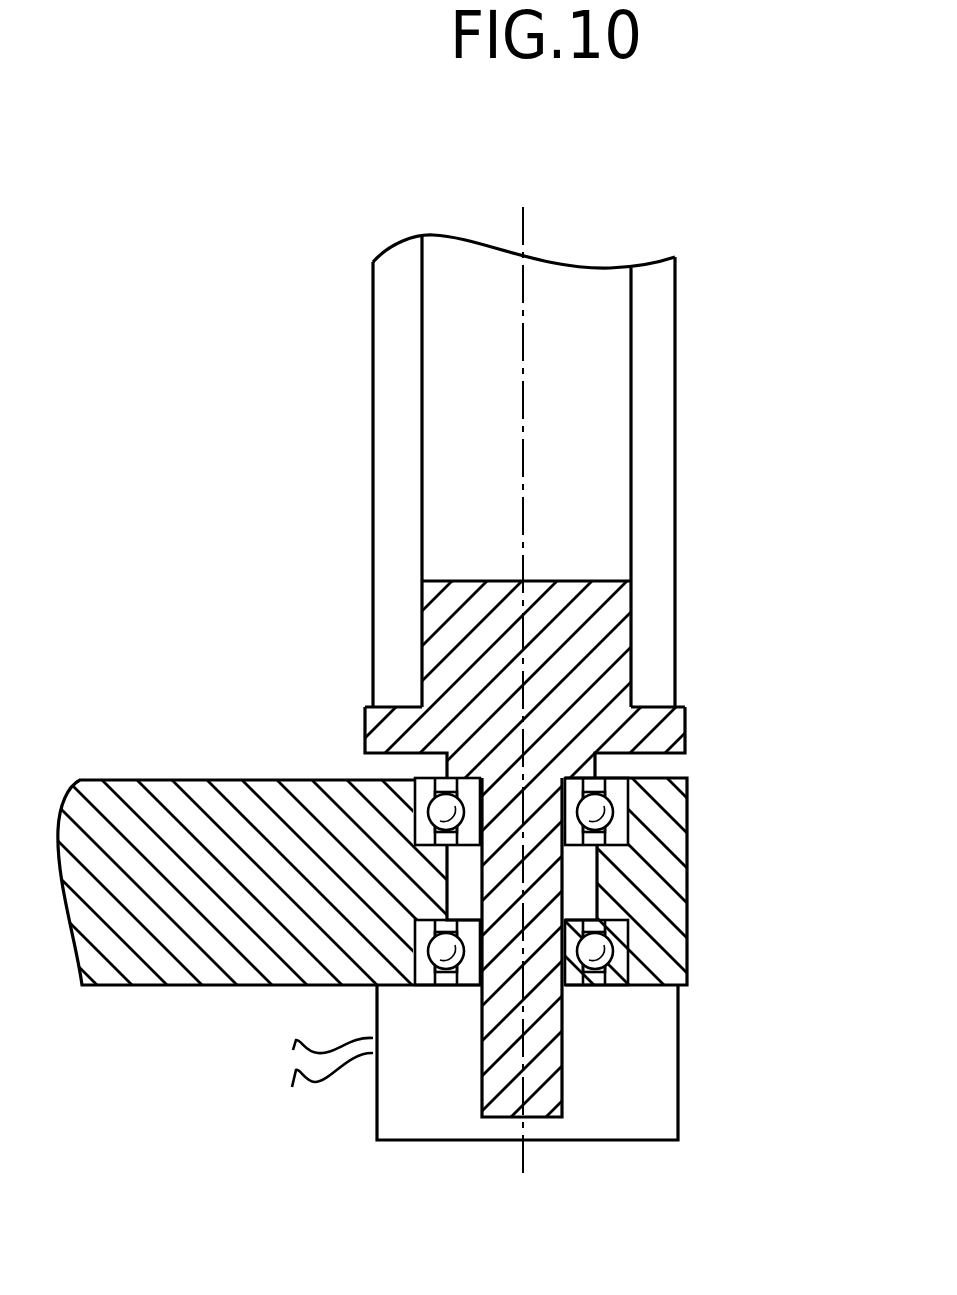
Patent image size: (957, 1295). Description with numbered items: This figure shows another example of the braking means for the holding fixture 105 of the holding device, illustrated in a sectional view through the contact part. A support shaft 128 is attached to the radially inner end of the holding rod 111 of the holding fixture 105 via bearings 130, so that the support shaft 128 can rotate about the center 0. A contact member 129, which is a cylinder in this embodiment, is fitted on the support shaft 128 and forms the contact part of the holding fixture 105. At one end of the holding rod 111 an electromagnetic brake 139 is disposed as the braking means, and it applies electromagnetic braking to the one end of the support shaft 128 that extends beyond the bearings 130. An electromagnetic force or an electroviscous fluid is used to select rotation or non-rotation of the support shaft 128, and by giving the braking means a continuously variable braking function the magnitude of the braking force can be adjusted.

The center 0 is at (523, 239).
The holding fixture 105 is at (184, 440).
The holding rod 111 is at (200, 790).
The support shaft 128 is at (602, 633).
The contact member 129 is at (655, 314).
The bearings 130 is at (612, 816).
The electromagnetic brake 139 is at (660, 1058).